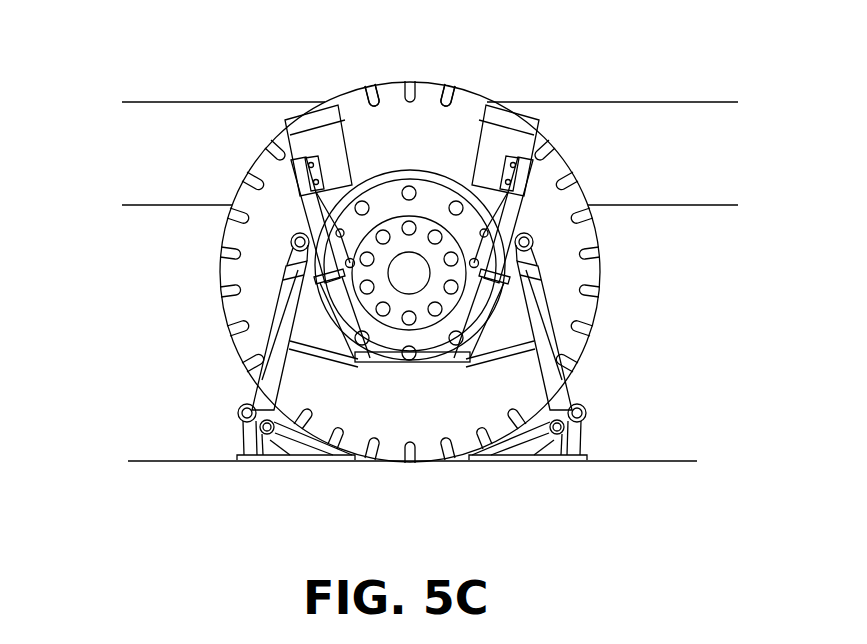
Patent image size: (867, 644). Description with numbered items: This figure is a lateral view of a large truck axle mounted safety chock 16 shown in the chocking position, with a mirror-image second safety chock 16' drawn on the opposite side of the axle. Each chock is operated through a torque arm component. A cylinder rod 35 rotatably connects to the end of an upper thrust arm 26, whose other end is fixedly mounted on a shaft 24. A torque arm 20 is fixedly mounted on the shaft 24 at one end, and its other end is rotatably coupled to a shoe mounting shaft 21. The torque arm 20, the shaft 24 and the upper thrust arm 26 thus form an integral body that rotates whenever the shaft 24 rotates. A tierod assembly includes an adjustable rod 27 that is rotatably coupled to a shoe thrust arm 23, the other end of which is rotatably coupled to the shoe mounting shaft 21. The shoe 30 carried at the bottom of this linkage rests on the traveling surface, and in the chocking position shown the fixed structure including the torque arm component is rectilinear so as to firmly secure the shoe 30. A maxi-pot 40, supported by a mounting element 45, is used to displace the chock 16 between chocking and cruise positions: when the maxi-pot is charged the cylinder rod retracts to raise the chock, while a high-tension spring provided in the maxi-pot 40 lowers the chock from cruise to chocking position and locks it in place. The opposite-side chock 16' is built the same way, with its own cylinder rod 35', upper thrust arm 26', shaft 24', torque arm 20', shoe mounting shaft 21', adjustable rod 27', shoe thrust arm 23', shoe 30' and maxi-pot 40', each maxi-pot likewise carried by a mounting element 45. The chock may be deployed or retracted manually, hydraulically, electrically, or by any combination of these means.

The safety chock 16 is at (99, 357).
The stand assembly (right) 16' is at (728, 370).
The torque arm 20 is at (309, 321).
The hydraulic cylinder (right) 20' is at (510, 321).
The shoe mounting shaft 21 is at (319, 472).
The pivot lug (right) 21' is at (503, 472).
The shoe thrust arm 23 is at (212, 429).
The clevis foot (right) 23' is at (608, 429).
The shaft 24 is at (247, 230).
The tie rod with ball joints (right) 24' is at (574, 230).
The upper thrust arm 26 is at (257, 257).
The link strap (right) 26' is at (564, 257).
The adjustable rod 27 is at (215, 325).
The piston rod (right) 27' is at (598, 325).
The shoe 30 is at (296, 477).
The base plate (right) 30' is at (548, 480).
The cylinder rod 35 is at (383, 92).
The rim slot (right) 35' is at (441, 93).
The maxi-pot 40 is at (319, 102).
The mounting box (right) 40' is at (501, 102).
The mounting element 45 is at (305, 173).